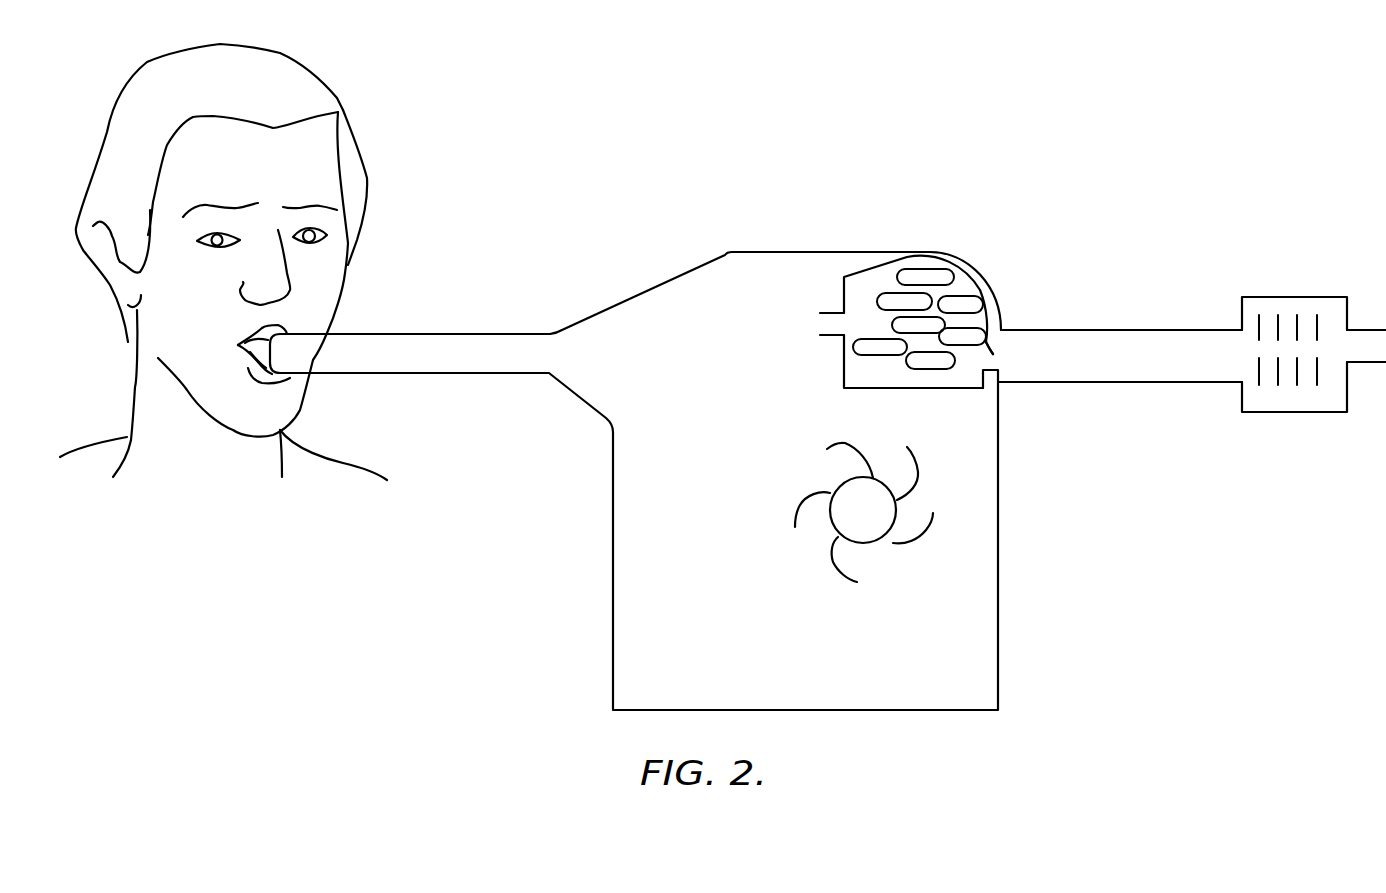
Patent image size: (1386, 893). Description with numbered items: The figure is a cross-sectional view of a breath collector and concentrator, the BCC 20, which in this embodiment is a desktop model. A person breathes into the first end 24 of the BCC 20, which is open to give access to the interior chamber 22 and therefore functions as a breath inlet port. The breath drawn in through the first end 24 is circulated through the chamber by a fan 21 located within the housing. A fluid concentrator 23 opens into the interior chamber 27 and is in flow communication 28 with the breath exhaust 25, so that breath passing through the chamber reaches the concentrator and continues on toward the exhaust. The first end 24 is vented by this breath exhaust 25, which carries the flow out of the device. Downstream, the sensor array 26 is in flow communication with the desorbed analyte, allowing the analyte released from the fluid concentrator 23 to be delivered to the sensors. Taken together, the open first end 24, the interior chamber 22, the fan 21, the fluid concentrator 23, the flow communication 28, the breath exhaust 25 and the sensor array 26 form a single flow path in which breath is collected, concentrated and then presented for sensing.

The BCC 20 is at (850, 252).
The fan 21 is at (872, 535).
The interior chamber 22 is at (668, 352).
The fluid concentrator 23 is at (930, 303).
The first end 24 is at (482, 333).
The breath exhaust 25 is at (1047, 348).
The sensor array 26 is at (1292, 318).
The interior chamber 27 is at (815, 327).
The flow communication 28 is at (990, 355).